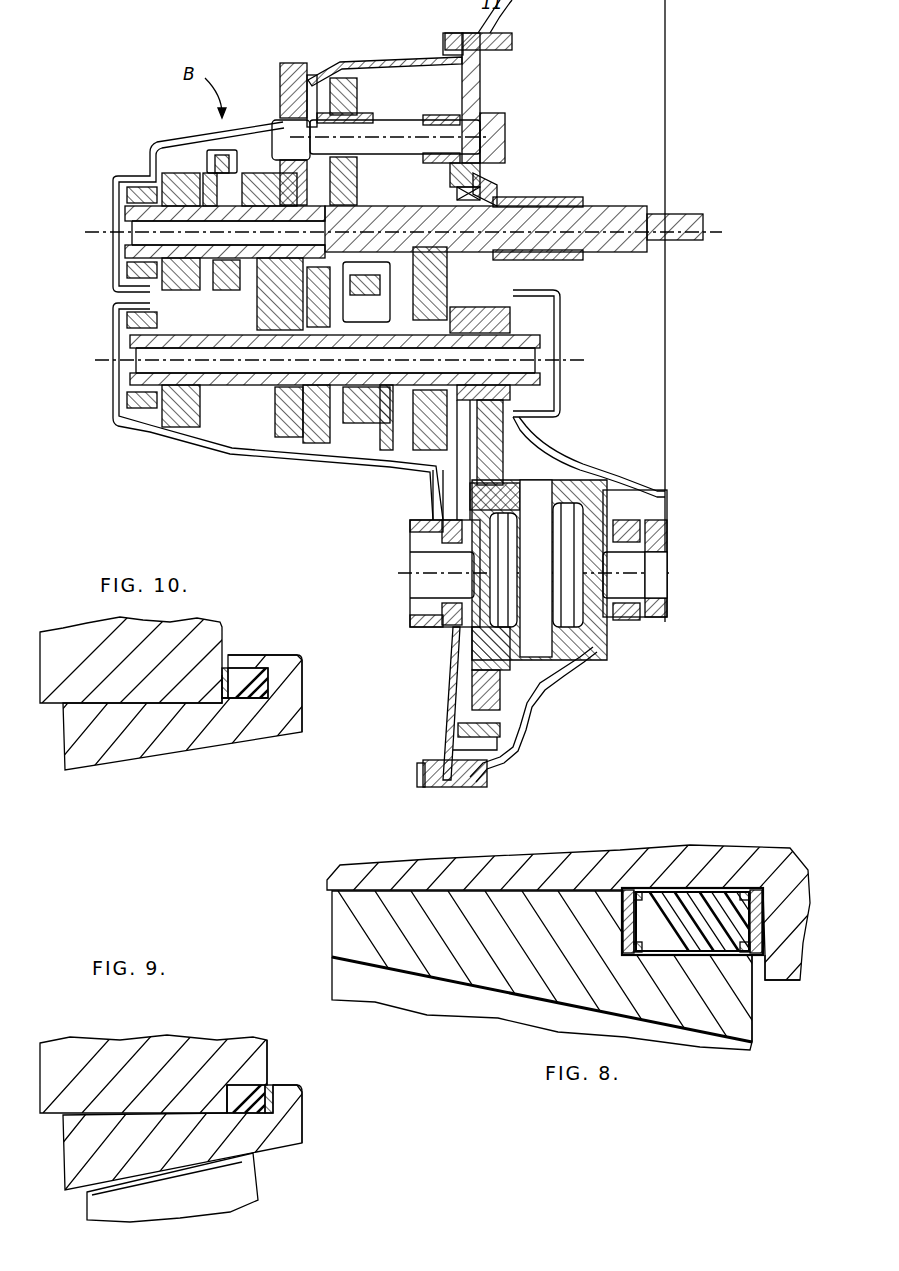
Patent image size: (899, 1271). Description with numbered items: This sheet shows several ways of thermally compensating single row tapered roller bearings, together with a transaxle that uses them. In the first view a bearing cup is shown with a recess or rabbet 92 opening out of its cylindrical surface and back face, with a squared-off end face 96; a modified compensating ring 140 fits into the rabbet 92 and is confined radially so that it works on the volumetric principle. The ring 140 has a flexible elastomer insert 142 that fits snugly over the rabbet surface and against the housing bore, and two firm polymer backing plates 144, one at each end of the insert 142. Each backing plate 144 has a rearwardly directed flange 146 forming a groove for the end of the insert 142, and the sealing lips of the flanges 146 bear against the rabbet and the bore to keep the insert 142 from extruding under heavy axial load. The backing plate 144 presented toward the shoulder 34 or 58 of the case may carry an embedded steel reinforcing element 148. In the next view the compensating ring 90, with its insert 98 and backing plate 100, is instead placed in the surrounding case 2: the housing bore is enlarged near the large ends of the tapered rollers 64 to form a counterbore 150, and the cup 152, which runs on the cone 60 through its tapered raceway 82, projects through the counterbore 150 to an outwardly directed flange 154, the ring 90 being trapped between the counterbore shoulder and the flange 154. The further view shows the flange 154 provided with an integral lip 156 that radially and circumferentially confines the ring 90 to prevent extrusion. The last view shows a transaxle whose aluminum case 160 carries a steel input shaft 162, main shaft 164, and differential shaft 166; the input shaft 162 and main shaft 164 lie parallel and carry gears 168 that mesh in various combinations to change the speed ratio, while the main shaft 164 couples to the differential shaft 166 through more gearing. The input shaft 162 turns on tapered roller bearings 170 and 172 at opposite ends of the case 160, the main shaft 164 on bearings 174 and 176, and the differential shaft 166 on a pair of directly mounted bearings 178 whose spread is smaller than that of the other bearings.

In FIG. 10, the case 2 is at (57, 630).
In FIG. 9, the case 2 is at (62, 1040).
In FIG. 8, the shoulder 34 or 58 is at (770, 965).
In FIG. 8, the cone 60 is at (442, 985).
In FIG. 9, the tapered rollers 64 is at (180, 1218).
In FIG. 9, the tapered raceway 82 is at (105, 1196).
In FIG. 10, the compensating ring 90 is at (248, 692).
In FIG. 9, the compensating ring 90 is at (268, 1077).
In FIG. 8, the rabbet 92 is at (692, 960).
In FIG. 8, the end face 96 is at (626, 938).
In FIG. 9, the insert 98 is at (243, 1118).
In FIG. 9, the backing plate 100 is at (295, 1090).
In FIG. 8, the compensating ring 140 is at (728, 878).
In FIG. 8, the insert 142 is at (690, 893).
In FIG. 8, the backing plates 144 is at (630, 905).
In FIG. 8, the flange 146 is at (642, 903).
In FIG. 8, the steel reinforcing element 148 is at (812, 895).
In FIG. 9, the counterbore 150 is at (238, 1088).
In FIG. 10, the cup 152 is at (98, 752).
In FIG. 9, the cup 152 is at (70, 1172).
In FIG. 10, the flange 154 is at (300, 675).
In FIG. 9, the flange 154 is at (300, 1105).
In FIG. 10, the lip 156 is at (254, 668).
In FIG. 11, the case 160 is at (398, 62).
In FIG. 11, the input shaft 162 is at (624, 240).
In FIG. 11, the main shaft 164 is at (230, 390).
In FIG. 11, the differential shaft 166 is at (585, 645).
In FIG. 11, the gears 168 is at (285, 437).
In FIG. 11, the tapered roller bearing 170 is at (140, 200).
In FIG. 11, the tapered roller bearing 172 is at (500, 197).
In FIG. 11, the tapered roller bearing 174 is at (140, 328).
In FIG. 11, the tapered roller bearing 176 is at (545, 392).
In FIG. 11, the tapered roller bearings 178 is at (645, 529).